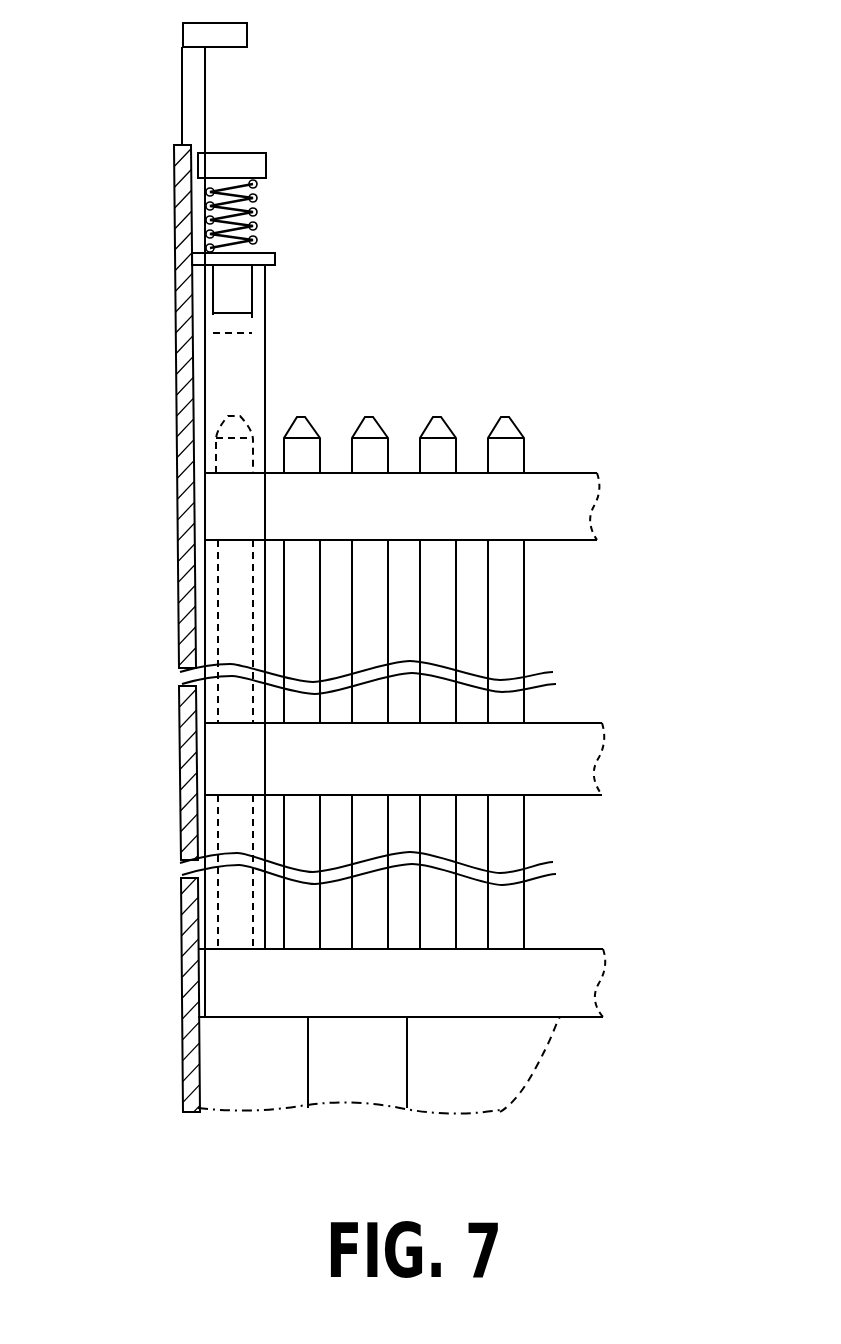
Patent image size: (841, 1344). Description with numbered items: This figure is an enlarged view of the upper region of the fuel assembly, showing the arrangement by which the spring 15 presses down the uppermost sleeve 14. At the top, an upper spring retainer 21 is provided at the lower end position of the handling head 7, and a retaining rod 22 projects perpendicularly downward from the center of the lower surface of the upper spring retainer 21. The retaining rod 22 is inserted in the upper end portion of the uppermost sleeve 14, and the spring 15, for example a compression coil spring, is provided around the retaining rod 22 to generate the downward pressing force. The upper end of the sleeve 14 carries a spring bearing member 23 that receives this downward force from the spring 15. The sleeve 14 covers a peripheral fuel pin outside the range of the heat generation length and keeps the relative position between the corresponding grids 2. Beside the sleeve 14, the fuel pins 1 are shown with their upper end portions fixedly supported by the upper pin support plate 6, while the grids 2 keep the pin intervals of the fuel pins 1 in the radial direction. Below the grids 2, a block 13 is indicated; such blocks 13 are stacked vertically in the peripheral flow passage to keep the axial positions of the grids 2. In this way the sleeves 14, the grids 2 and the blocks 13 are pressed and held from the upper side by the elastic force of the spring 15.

The fuel pins 1 is at (507, 610).
The grids 2 is at (218, 760).
The upper pin support plate 6 is at (222, 505).
The handling head 7 is at (247, 32).
The blocks 13 is at (495, 1070).
The sleeve 14 is at (222, 383).
The spring 15 is at (200, 190).
The upper spring retainer 21 is at (266, 165).
The retaining rod 22 is at (232, 180).
The spring bearing member 23 is at (192, 262).